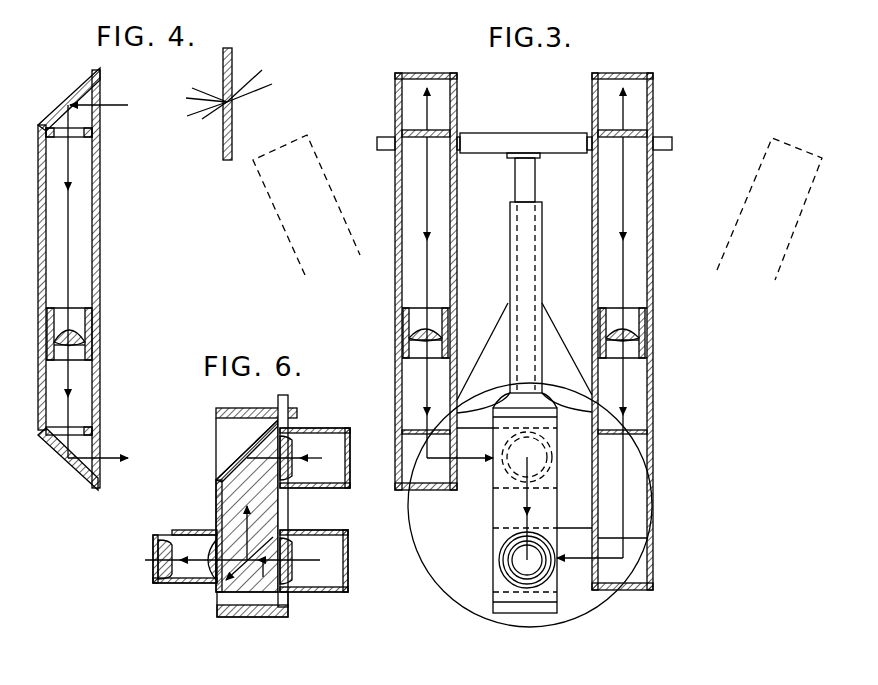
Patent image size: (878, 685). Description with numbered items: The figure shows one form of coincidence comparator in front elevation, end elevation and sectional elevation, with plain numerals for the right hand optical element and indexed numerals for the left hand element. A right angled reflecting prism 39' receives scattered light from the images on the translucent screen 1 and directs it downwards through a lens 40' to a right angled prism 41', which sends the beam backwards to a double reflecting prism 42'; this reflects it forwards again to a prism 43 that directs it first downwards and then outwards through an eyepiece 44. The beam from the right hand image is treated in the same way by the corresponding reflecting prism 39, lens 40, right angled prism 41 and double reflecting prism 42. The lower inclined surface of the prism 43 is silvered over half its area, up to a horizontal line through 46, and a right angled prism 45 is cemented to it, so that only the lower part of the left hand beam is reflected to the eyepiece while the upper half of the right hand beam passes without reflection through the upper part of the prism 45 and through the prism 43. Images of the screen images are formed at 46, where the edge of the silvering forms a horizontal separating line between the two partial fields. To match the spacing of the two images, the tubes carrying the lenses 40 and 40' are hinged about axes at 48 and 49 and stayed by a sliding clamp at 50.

In FIG. 4, the translucent screen 1 is at (230, 100).
In FIG. 3, the right angled reflecting prism 39 is at (643, 331).
In FIG. 4, the right angled reflecting prism 39' is at (99, 278).
In FIG. 3, the right angled reflecting prism 39' is at (450, 281).
In FIG. 3, the lens 40 is at (645, 326).
In FIG. 4, the lens 40' is at (98, 331).
In FIG. 3, the lens 40' is at (403, 326).
In FIG. 3, the right angled prism 41 is at (625, 510).
In FIG. 4, the right angled prism 41' is at (95, 458).
In FIG. 3, the right angled prism 41' is at (432, 476).
In FIG. 6, the double reflecting prism 42 is at (303, 589).
In FIG. 3, the double reflecting prism 42 is at (592, 580).
In FIG. 6, the double reflecting prism 42' is at (300, 442).
In FIG. 3, the double reflecting prism 42' is at (462, 483).
In FIG. 6, the prism 43 is at (217, 500).
In FIG. 3, the prism 43 is at (542, 526).
In FIG. 6, the eyepiece 44 is at (153, 566).
In FIG. 6, the right angled prism 45 is at (263, 578).
In FIG. 6, the separating line 46 is at (247, 562).
In FIG. 3, the hinge axis 48 is at (527, 560).
In FIG. 3, the hinge axis 49 is at (527, 460).
In FIG. 3, the sliding clamp 50 is at (536, 156).